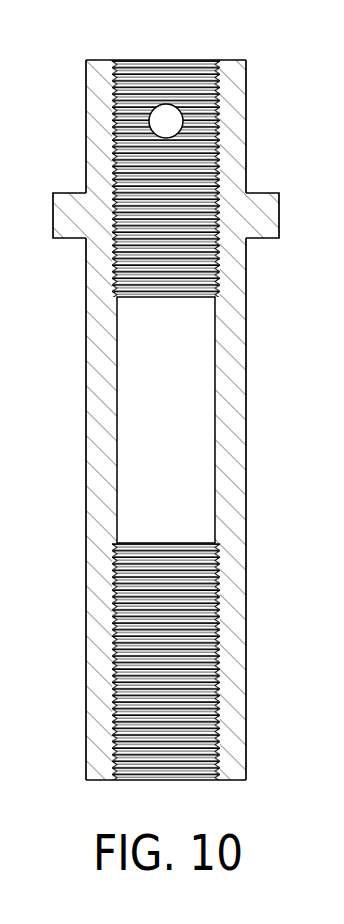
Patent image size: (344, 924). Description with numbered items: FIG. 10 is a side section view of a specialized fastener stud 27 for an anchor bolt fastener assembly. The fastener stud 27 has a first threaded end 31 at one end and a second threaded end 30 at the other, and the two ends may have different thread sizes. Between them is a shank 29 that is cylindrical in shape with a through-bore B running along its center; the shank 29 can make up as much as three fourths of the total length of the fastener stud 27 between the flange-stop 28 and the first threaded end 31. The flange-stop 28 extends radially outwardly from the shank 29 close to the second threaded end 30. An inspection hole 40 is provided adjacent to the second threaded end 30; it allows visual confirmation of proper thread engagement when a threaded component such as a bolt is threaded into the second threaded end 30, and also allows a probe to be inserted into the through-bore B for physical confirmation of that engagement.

The fastener stud 27 is at (231, 140).
The flange-stop 28 is at (280, 218).
The shank 29 is at (102, 590).
The second threaded end 30 is at (166, 60).
The first threaded end 31 is at (167, 781).
The inspection hole 40 is at (150, 134).
The through-bore B is at (173, 458).